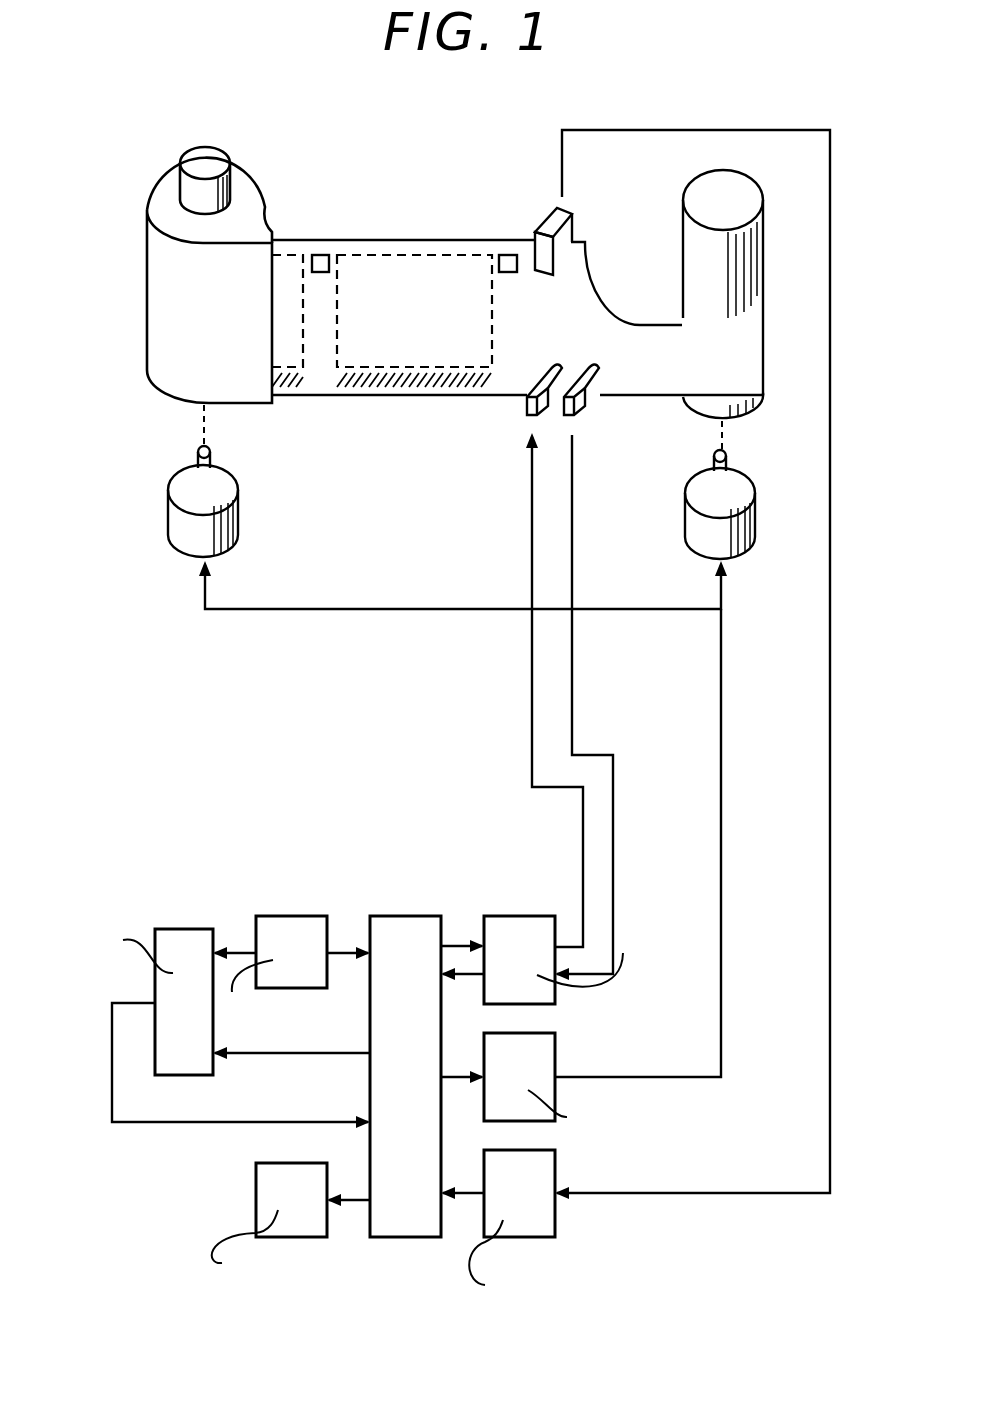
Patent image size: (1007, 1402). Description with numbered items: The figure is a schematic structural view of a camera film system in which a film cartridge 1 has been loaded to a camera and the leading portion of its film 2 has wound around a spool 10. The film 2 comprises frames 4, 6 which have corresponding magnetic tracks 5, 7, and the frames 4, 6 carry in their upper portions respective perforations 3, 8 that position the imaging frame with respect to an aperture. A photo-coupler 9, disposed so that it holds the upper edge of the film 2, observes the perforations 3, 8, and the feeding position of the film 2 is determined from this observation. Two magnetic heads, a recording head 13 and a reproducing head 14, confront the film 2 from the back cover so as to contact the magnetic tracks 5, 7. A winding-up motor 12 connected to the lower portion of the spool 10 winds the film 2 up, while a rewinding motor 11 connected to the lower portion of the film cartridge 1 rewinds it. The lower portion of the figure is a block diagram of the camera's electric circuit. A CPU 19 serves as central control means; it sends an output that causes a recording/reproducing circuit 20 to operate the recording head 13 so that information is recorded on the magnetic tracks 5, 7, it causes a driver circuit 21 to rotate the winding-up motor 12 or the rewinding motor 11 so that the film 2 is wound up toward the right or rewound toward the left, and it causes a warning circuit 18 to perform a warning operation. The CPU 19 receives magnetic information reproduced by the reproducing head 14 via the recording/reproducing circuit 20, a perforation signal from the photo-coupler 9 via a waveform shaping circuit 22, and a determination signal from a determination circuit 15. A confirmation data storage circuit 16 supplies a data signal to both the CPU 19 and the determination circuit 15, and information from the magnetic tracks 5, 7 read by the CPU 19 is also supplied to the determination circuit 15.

The film cartridge 1 is at (148, 312).
The film 2 is at (375, 246).
The perforation 3 is at (507, 255).
The frame 4 is at (430, 262).
The magnetic track 5 is at (415, 388).
The frame 6 is at (290, 258).
The magnetic track 7 is at (294, 388).
The perforation 8 is at (323, 255).
The photo-coupler 9 is at (566, 225).
The spool 10 is at (743, 187).
The rewinding motor 11 is at (232, 522).
The winding-up motor 12 is at (750, 525).
The recording head 13 is at (528, 412).
The reproducing head 14 is at (578, 412).
The determination circuit 15 is at (188, 928).
The confirmation data storage circuit 16 is at (296, 915).
The warning circuit 18 is at (256, 1190).
The CPU 19 is at (405, 915).
The recording/reproducing circuit 20 is at (525, 915).
The driver circuit 21 is at (558, 1050).
The waveform shaping circuit 22 is at (558, 1167).